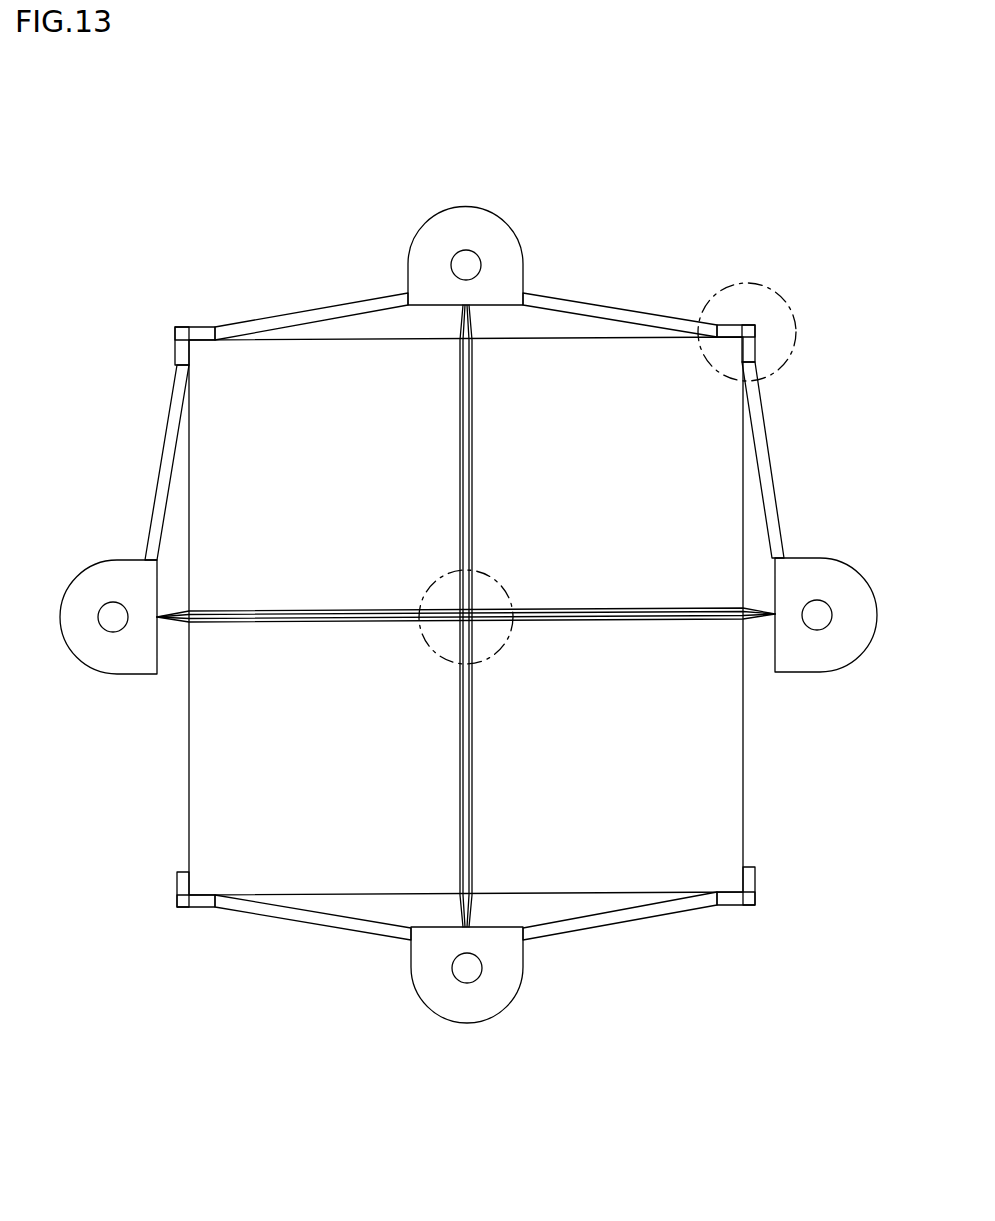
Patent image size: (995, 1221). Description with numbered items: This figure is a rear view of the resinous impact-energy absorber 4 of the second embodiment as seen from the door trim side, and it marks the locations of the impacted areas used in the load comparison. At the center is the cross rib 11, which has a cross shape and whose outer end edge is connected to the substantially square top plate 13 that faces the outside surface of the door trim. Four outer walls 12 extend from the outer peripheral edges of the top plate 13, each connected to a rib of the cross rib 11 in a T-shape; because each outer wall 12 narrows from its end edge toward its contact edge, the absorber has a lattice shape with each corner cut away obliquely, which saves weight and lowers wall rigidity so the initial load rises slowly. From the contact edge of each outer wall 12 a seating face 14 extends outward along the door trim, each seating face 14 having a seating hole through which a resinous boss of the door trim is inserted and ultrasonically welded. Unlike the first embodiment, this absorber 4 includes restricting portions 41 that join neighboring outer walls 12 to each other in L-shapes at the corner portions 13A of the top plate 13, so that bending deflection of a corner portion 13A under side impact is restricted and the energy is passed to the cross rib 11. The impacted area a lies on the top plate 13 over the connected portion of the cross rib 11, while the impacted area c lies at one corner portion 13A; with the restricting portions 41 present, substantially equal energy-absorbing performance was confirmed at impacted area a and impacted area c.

The resinous impact-energy absorber 4 is at (601, 214).
The cross rib 11 is at (473, 395).
The outer wall 12 is at (357, 308).
The top plate 13 is at (660, 345).
The corner portion 13A is at (180, 328).
The seating face 14 is at (481, 215).
The restricting portion 41 is at (175, 342).
The impacted area a is at (510, 660).
The impacted area c is at (790, 283).